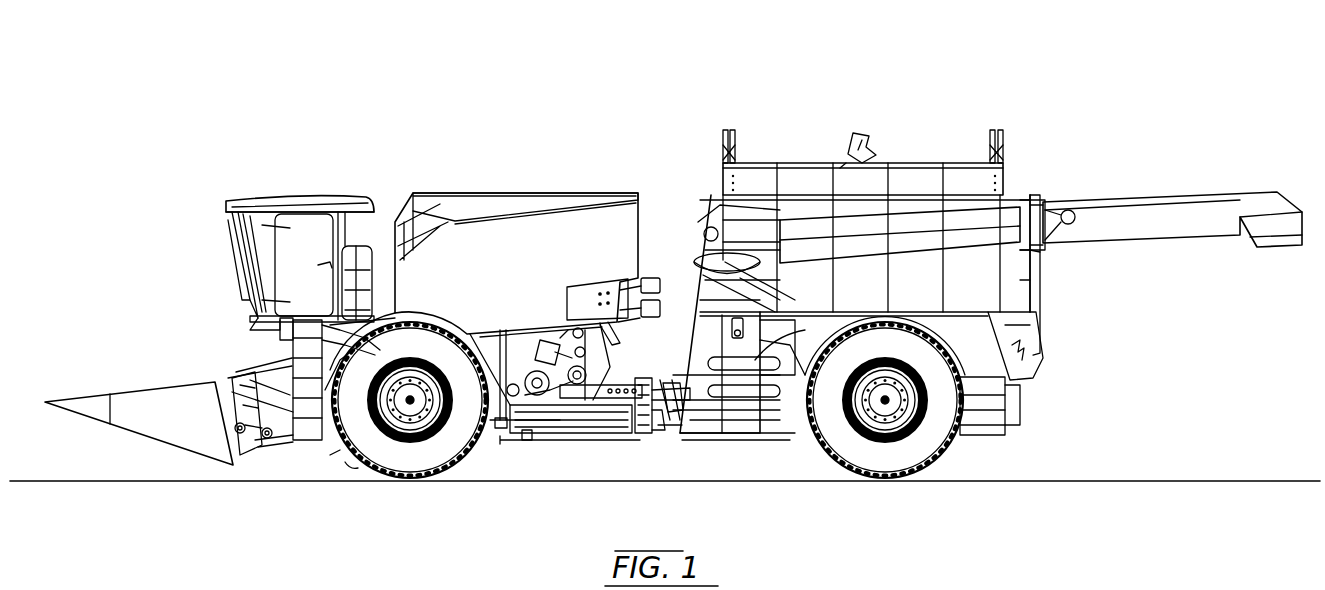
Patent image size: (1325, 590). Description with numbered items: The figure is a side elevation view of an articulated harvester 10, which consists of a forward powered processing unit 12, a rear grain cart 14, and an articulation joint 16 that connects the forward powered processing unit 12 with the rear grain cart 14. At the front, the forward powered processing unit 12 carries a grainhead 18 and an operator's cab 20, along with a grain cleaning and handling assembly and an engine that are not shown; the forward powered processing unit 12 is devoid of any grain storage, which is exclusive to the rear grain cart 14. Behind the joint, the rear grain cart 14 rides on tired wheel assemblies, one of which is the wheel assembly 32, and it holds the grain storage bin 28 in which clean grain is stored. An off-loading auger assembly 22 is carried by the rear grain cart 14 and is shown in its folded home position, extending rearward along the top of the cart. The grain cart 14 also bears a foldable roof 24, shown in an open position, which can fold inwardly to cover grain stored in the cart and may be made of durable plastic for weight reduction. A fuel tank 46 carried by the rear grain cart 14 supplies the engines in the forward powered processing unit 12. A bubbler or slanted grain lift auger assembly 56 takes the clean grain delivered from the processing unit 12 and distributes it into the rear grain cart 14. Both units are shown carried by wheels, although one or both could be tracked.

The articulated harvester 10 is at (433, 88).
The forward powered processing unit 12 is at (231, 133).
The rear grain cart 14 is at (1079, 109).
The articulation joint 16 is at (577, 456).
The grainhead 18 is at (170, 384).
The operator's cab 20 is at (325, 193).
The off-loading auger assembly 22 is at (1213, 200).
The foldable roof 24 is at (900, 175).
The grain storage bin 28 is at (1010, 307).
The tired wheel assembly 32 is at (887, 463).
The fuel tank 46 is at (713, 408).
The bubbler grain lift auger assembly 56 is at (858, 150).